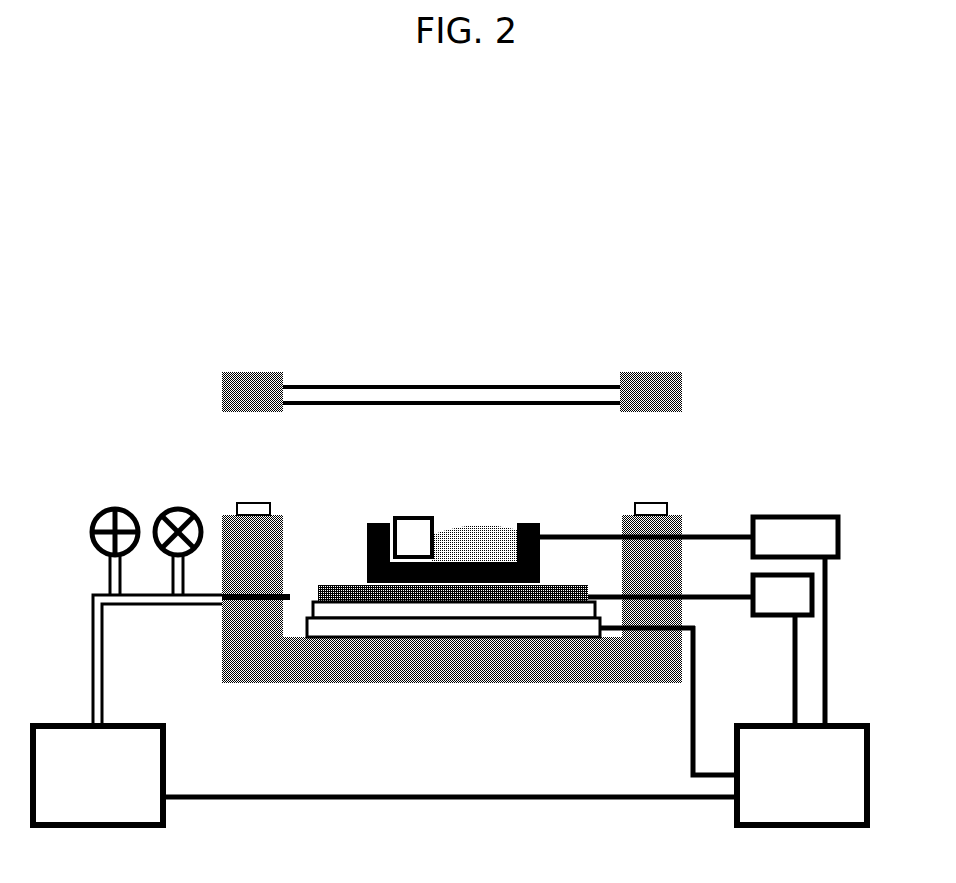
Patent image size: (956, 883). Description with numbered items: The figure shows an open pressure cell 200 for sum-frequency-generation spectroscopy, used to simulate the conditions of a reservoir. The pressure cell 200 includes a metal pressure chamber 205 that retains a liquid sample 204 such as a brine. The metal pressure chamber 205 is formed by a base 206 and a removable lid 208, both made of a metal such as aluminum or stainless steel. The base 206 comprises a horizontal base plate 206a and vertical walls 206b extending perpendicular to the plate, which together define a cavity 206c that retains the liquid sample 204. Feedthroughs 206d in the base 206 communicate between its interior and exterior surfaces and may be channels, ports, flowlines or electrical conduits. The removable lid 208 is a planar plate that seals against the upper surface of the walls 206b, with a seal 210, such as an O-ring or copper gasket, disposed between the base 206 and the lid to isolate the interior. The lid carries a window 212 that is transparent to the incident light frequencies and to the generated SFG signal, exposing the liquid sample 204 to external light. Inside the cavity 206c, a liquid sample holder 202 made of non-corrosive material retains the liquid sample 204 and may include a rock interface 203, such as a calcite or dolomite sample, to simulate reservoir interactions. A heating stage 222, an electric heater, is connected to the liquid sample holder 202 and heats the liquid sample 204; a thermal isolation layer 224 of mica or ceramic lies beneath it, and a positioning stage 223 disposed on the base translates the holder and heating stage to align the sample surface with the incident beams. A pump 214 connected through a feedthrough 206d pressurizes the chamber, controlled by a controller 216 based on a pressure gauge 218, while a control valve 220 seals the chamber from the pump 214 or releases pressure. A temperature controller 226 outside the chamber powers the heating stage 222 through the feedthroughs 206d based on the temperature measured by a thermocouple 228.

The pressure cell 200 is at (226, 228).
The metal pressure chamber 205 is at (187, 265).
The base 206 is at (233, 513).
The horizontal base plate 206a is at (328, 683).
The vertical wall 206b is at (683, 520).
The cavity 206c is at (333, 527).
The feedthrough 206d is at (233, 605).
The removable lid 208 is at (232, 372).
The seal 210 is at (667, 503).
The window 212 is at (410, 387).
The pump 214 is at (385, 710).
The controller 216 is at (780, 691).
The pressure gauge 218 is at (105, 509).
The control valve 220 is at (168, 509).
The heating stage 222 is at (485, 607).
The positioning stage 223 is at (353, 638).
The thermal isolation layer 224 is at (422, 622).
The temperature controller 226 is at (782, 595).
The thermocouple 228 is at (795, 537).
The liquid sample holder 202 is at (535, 527).
The rock interface 203 is at (427, 518).
The liquid sample 204 is at (450, 532).